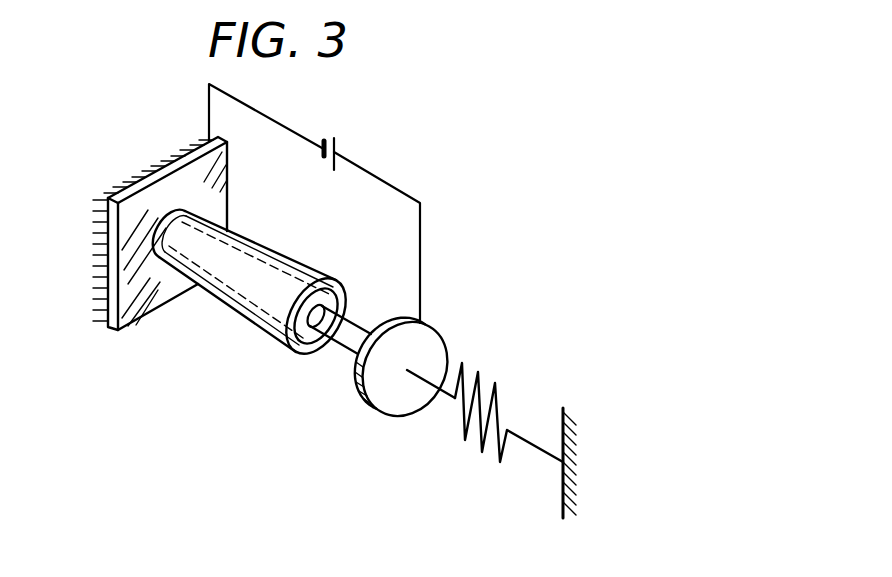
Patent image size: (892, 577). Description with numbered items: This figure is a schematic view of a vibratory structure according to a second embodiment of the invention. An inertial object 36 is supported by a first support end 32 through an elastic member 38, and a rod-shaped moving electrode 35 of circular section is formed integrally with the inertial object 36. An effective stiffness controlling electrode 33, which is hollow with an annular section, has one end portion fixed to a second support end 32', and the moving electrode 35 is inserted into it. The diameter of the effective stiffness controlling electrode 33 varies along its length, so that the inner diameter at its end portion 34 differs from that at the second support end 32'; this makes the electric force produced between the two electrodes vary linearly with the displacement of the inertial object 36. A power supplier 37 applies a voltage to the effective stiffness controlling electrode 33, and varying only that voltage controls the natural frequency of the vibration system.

The second support end 32' is at (145, 228).
The power supplier 37 is at (338, 150).
The effective stiffness controlling electrode 33 is at (227, 308).
The end portion of the effective stiffness controlling electrode 34 is at (305, 352).
The moving electrode 35 is at (367, 318).
The inertial object 36 is at (432, 322).
The elastic member 38 is at (502, 412).
The first support end 32 is at (602, 431).